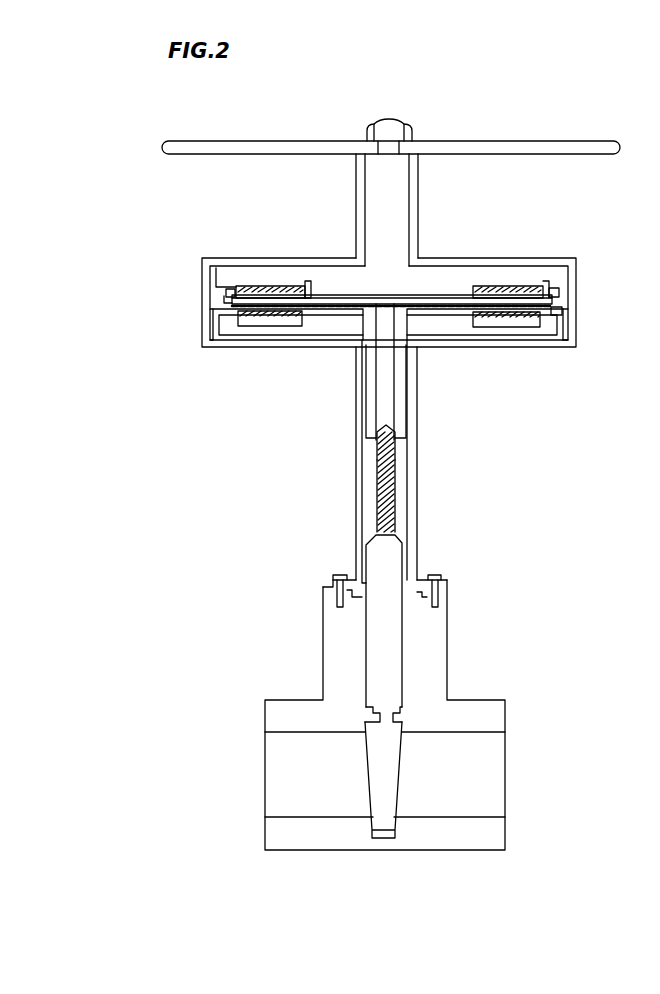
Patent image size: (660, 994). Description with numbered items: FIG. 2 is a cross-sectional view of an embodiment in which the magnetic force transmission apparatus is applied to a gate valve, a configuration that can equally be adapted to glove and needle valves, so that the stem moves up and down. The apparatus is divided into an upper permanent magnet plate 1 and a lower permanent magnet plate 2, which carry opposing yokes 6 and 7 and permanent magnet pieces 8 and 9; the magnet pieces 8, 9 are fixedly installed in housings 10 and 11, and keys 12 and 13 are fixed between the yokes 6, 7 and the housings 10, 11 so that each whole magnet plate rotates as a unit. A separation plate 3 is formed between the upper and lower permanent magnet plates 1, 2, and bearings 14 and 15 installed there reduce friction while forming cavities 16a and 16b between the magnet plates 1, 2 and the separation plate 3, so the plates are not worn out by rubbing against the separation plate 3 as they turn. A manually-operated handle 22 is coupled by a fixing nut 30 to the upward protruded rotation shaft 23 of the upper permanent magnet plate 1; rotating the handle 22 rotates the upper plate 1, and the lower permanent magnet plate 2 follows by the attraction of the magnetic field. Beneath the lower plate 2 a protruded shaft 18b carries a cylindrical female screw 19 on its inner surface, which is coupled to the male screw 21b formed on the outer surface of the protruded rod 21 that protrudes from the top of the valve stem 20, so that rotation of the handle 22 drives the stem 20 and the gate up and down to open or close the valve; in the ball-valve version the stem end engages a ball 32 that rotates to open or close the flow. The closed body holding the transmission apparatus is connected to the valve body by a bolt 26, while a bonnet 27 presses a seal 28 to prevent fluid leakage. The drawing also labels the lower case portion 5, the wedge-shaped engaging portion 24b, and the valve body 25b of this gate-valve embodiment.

The upper permanent magnet plate 1 is at (95, 197).
The lower permanent magnet plate 2 is at (100, 377).
The separation plate 3 is at (560, 291).
The lower case 5 is at (570, 332).
The yoke 6 is at (228, 293).
The yoke 7 is at (228, 337).
The permanent magnet piece 8 is at (232, 302).
The permanent magnet piece 9 is at (242, 312).
The housing 10 is at (312, 276).
The housing 11 is at (258, 320).
The key 12 is at (240, 288).
The key 13 is at (490, 331).
The bearing 14 is at (546, 272).
The bearing 15 is at (560, 309).
The cavity 16a is at (343, 304).
The cavity 16b is at (357, 297).
The protruded shaft 18b is at (372, 438).
The cylindrical female screw 19 is at (398, 392).
The valve stem 20 is at (396, 548).
The protruded rod 21 is at (390, 500).
The male screw 21b is at (392, 458).
The manually-operated handle 22 is at (594, 150).
The rotation shaft 23 is at (396, 184).
The engaging groove 24b is at (396, 707).
The base 25b is at (490, 710).
The bolt 26 is at (338, 574).
The bonnet 27 is at (356, 586).
The seal 28 is at (356, 604).
The fixing nut 30 is at (402, 120).
The ball 32 is at (378, 773).